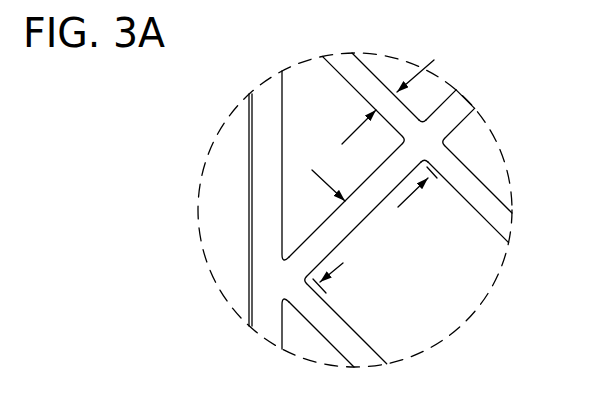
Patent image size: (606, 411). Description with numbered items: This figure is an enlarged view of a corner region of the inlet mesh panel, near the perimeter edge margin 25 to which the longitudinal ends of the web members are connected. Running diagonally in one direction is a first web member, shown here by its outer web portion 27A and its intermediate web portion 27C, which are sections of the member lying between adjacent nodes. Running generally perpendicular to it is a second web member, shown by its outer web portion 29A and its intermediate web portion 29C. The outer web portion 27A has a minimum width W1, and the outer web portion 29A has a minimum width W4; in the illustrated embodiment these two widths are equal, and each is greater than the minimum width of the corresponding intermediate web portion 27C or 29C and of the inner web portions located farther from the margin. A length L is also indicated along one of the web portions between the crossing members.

The perimeter edge margin 25 is at (265, 156).
The outer web portion 27A is at (373, 196).
The intermediate web portion 27C is at (456, 110).
The outer web portion 29A is at (362, 77).
The intermediate web portion 29C is at (489, 193).
The minimum width W1 is at (330, 155).
The minimum width W4 is at (427, 60).
The length L is at (343, 262).